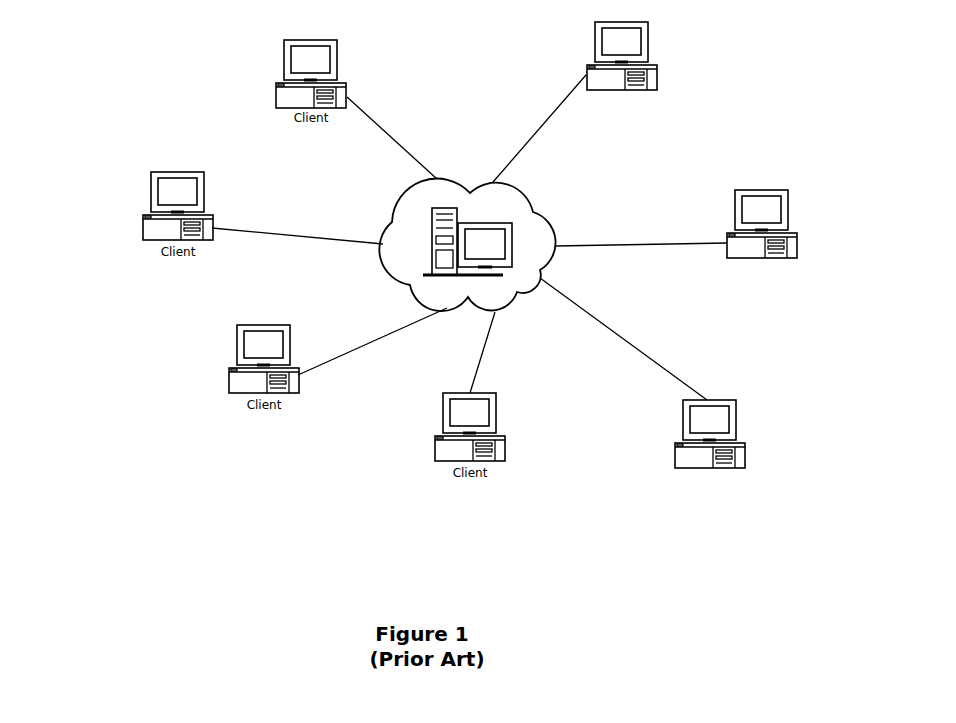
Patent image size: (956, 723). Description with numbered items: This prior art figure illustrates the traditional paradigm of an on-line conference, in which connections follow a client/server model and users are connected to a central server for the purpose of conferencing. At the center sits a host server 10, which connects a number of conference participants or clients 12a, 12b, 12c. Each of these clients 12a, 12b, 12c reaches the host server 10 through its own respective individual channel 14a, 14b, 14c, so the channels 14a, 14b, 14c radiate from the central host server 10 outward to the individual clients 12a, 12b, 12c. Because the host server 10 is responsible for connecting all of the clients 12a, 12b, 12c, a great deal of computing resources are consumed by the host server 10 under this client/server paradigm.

The host server 10 is at (503, 268).
The client 12a is at (657, 68).
The client 12b is at (796, 240).
The client 12c is at (746, 450).
The individual channel 14a is at (532, 130).
The individual channel 14b is at (593, 244).
The individual channel 14c is at (612, 327).